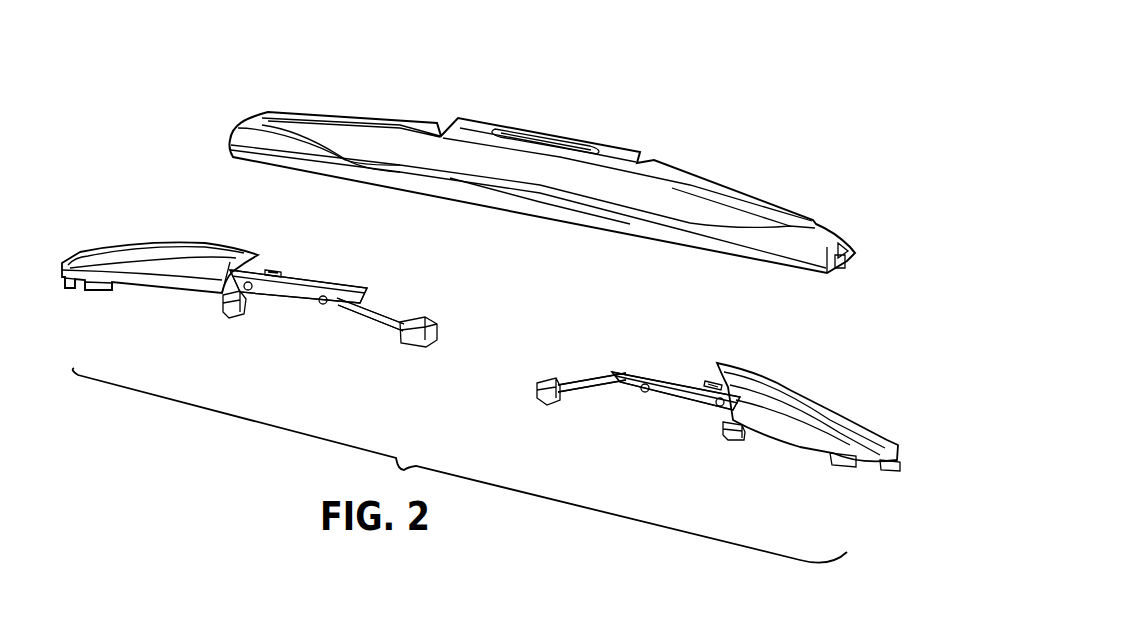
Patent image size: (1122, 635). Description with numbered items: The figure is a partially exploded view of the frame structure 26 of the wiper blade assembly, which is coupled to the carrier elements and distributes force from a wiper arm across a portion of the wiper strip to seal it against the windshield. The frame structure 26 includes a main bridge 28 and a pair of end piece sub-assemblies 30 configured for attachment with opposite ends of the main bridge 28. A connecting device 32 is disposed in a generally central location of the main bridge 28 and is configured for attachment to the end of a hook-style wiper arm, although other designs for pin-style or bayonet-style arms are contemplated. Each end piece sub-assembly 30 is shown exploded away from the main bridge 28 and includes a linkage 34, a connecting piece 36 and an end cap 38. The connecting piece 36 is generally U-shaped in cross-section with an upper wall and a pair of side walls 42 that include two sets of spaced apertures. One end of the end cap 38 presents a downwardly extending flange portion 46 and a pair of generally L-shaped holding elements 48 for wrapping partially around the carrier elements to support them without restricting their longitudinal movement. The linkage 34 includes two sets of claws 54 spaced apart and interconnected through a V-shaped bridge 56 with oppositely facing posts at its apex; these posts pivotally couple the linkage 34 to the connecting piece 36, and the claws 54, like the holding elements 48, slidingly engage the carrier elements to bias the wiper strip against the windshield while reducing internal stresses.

The frame structure 26 is at (770, 72).
The main bridge 28 is at (677, 170).
The connecting device 32 is at (540, 137).
The end cap 38 is at (164, 242).
The end piece sub-assembly 30 is at (247, 242).
The connecting piece 36 is at (344, 285).
The side walls 42 is at (276, 274).
The linkage 34 is at (398, 312).
The V-shaped bridge 56 is at (367, 315).
The claws 54 is at (219, 311).
The holding elements 48 is at (92, 291).
The downwardly extending flange portion 46 is at (68, 290).